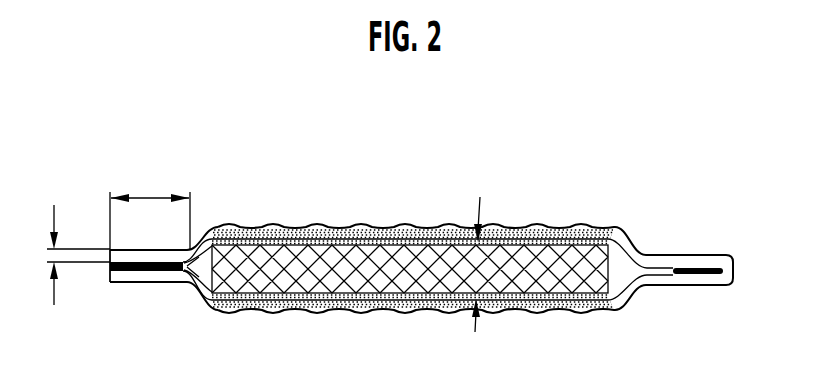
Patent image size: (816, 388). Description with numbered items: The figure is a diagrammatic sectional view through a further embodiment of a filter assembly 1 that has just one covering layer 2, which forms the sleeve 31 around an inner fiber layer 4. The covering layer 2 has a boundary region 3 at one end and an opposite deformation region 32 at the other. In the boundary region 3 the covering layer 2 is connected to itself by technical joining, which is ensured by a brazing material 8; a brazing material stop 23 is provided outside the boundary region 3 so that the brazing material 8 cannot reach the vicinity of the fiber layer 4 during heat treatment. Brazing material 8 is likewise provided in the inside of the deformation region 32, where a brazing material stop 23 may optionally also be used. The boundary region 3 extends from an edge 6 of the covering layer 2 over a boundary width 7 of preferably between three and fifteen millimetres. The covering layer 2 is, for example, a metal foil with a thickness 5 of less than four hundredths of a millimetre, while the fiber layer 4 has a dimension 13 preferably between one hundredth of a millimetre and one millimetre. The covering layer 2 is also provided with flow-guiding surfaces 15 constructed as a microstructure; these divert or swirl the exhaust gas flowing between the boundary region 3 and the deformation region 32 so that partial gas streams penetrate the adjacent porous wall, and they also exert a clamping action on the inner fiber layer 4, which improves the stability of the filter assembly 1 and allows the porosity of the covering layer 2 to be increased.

The filter assembly 1 is at (478, 127).
The covering layer 2 is at (623, 243).
The boundary region 3 is at (137, 249).
The fiber layer 4 is at (531, 276).
The thickness 5 is at (47, 252).
The edge 6 is at (108, 279).
The boundary width 7 is at (150, 198).
The brazing material 8 is at (148, 272).
The dimension 13 is at (497, 244).
The flow-guiding surfaces 15 is at (292, 228).
The brazing material stop 23 is at (188, 282).
The sleeve 31 is at (338, 329).
The deformation region 32 is at (723, 260).